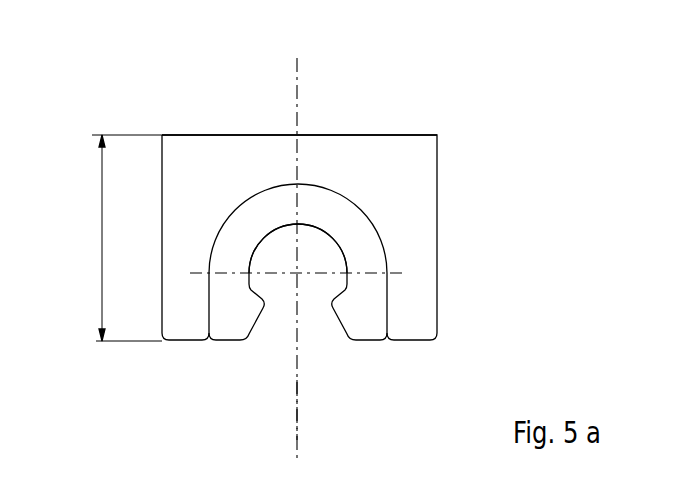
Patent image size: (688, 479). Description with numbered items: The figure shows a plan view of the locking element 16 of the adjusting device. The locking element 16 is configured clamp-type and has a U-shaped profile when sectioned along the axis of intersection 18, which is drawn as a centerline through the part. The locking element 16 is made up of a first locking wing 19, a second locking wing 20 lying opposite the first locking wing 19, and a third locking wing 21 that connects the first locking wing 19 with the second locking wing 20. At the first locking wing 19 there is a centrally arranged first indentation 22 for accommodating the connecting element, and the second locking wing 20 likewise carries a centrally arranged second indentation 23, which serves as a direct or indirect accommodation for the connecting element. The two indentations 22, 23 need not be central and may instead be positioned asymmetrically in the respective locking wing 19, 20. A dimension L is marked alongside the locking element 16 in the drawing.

The locking element 16 is at (508, 137).
The axis of intersection 18 is at (297, 405).
The first locking wing 19 is at (423, 290).
The second locking wing 20 is at (370, 322).
The third locking wing 21 is at (383, 135).
The first indentation 22 is at (218, 231).
The second indentation 23 is at (323, 230).
The length dimension L is at (102, 240).